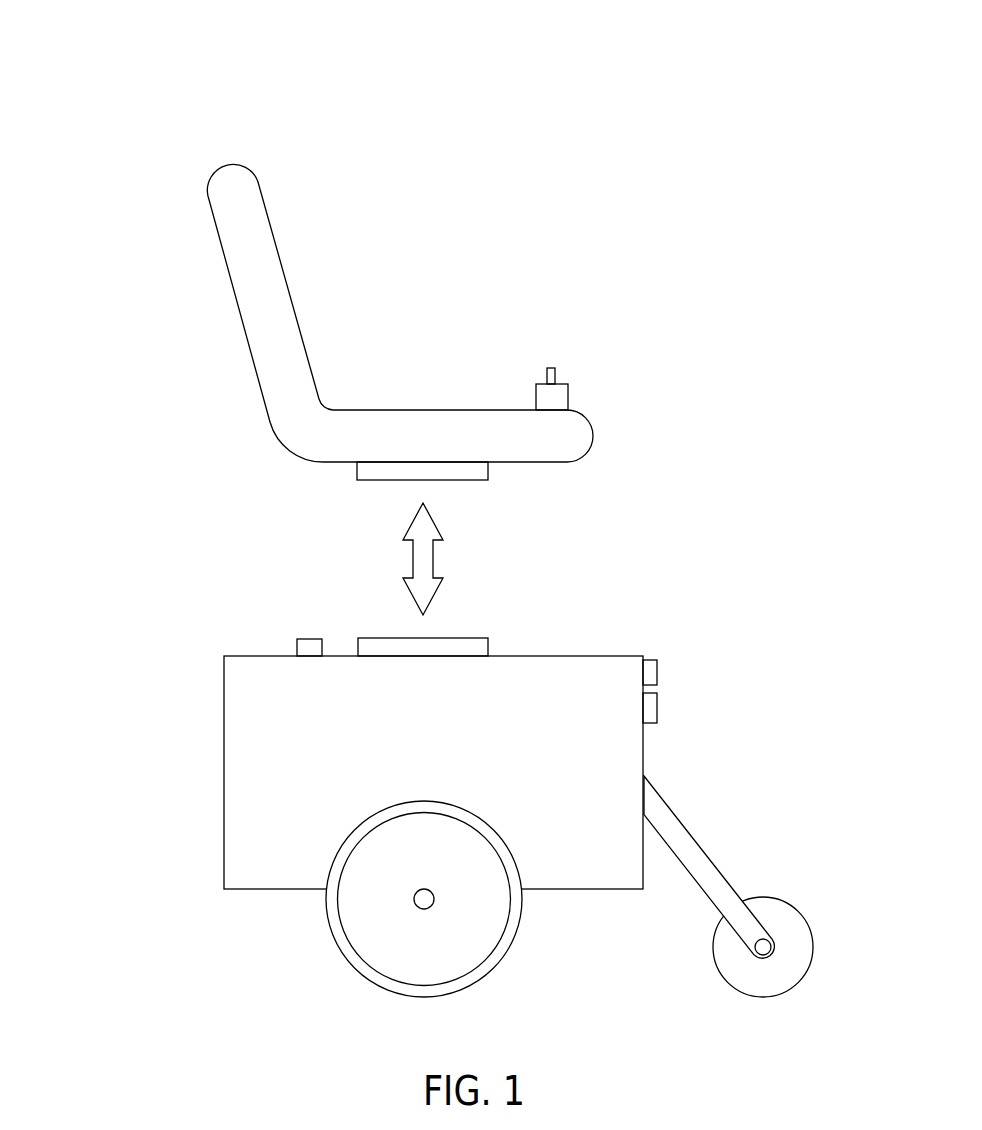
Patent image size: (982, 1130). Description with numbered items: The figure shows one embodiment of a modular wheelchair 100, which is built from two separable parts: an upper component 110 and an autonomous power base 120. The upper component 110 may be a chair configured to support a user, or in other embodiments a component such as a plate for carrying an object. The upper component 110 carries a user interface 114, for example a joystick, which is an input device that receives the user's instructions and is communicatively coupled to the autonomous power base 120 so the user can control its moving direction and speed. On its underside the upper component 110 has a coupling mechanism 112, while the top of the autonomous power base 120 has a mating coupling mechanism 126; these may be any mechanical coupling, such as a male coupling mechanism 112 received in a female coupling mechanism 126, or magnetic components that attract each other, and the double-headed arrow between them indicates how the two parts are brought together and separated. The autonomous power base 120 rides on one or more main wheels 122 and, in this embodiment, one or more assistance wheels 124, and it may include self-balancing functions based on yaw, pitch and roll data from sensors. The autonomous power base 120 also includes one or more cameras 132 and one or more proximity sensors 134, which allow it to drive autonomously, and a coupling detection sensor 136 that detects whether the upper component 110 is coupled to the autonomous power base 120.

The modular wheelchair 100 is at (76, 59).
The upper component 110 is at (457, 313).
The coupling mechanism 112 is at (488, 480).
The user interface 114 is at (568, 396).
The autonomous power base 120 is at (459, 716).
The main wheels 122 is at (518, 925).
The assistance wheels 124 is at (813, 947).
The coupling mechanism 126 is at (483, 638).
The cameras 132 is at (657, 672).
The proximity sensors 134 is at (657, 710).
The coupling detection sensor 136 is at (310, 638).